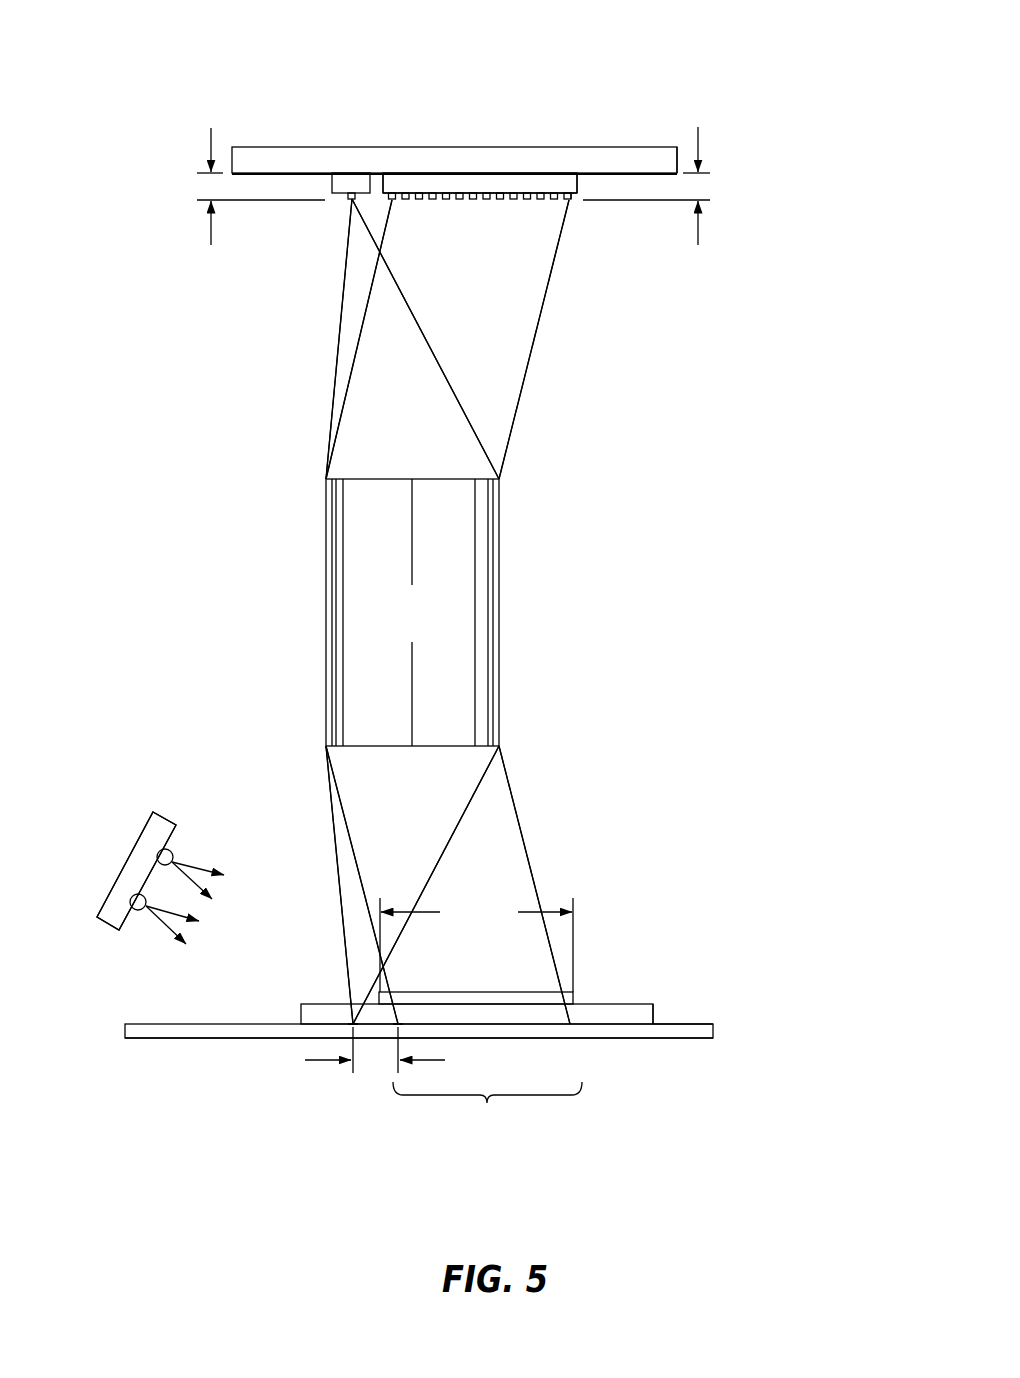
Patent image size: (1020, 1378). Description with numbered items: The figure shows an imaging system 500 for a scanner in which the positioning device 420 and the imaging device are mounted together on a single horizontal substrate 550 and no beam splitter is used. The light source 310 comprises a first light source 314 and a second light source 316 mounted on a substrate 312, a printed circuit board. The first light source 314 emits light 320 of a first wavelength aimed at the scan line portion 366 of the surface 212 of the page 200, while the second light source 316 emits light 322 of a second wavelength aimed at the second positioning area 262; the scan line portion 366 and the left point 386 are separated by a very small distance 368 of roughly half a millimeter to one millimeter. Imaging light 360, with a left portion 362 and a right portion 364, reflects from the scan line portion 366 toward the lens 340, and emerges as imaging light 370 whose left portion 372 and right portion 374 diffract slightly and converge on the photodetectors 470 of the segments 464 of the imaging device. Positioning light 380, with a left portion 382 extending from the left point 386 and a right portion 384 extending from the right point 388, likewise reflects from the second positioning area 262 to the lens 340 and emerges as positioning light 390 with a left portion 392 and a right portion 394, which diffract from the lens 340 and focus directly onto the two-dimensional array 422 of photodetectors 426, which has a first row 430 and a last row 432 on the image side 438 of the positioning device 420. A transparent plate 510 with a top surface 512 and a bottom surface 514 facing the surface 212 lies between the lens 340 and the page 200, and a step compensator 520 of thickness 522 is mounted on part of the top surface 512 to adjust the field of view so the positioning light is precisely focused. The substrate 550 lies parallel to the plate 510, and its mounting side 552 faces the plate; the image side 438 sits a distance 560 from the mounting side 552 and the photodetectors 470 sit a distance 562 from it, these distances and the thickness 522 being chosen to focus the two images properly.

The page 200 is at (729, 1032).
The surface 212 is at (677, 1024).
The second positioning area 262 is at (487, 1108).
The light source 310 is at (153, 796).
The substrate 312 is at (157, 857).
The first light source 314 is at (160, 853).
The second light source 316 is at (130, 902).
The light 320 is at (206, 866).
The light 322 is at (163, 931).
The lens 340 is at (504, 613).
The imaging light 360 is at (343, 952).
The left portion 362 is at (338, 908).
The right portion 364 is at (473, 790).
The scan line portion 366 is at (347, 1023).
The distance 368 is at (305, 1060).
The imaging light 370 is at (337, 372).
The left portion 372 is at (340, 313).
The right portion 374 is at (418, 315).
The positioning light 380 is at (523, 813).
The left portion 382 is at (350, 830).
The right portion 384 is at (532, 865).
The left point 386 is at (398, 1020).
The right point 388 is at (570, 1026).
The positioning light 390 is at (519, 408).
The left portion 392 is at (347, 405).
The right portion 394 is at (530, 357).
The positioning device 420 is at (538, 172).
The two-dimensional array 422 is at (578, 184).
The photodetectors 426 is at (479, 209).
The first row 430 is at (395, 202).
The last row 432 is at (569, 202).
The image side 438 is at (482, 194).
The segments 464 is at (331, 184).
The photodetectors 470 is at (350, 203).
The imaging system 500 is at (718, 62).
The plate 510 is at (649, 987).
The top surface 512 is at (612, 1004).
The bottom surface 514 is at (630, 1038).
The step compensator 520 is at (462, 987).
The thickness 522 is at (476, 945).
The substrate 550 is at (423, 146).
The mounting side 552 is at (643, 178).
The distance 560 is at (700, 245).
The distance 562 is at (210, 240).